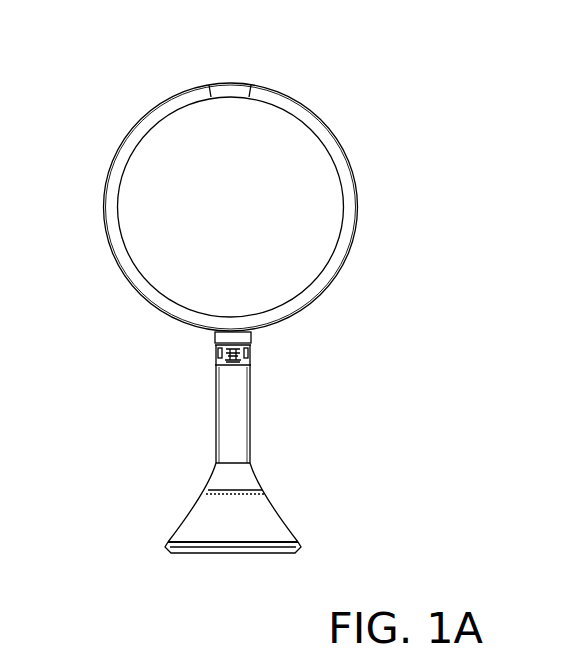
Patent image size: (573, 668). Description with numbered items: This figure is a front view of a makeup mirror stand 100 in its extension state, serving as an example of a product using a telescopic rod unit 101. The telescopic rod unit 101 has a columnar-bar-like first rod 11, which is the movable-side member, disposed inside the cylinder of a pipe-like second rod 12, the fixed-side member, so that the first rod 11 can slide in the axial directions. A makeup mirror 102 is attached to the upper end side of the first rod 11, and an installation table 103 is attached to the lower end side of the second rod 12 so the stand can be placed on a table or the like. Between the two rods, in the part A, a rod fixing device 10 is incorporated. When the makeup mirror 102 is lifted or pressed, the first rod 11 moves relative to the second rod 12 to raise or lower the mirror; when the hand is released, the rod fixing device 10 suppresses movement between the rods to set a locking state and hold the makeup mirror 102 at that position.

The makeup mirror stand 100 is at (381, 61).
The makeup mirror 102 is at (349, 213).
The telescopic rod unit 101 is at (125, 354).
The first rod 11 is at (214, 338).
The rod fixing device 10 is at (256, 345).
The part A is at (260, 360).
The second rod 12 is at (215, 448).
The installation table 103 is at (270, 525).